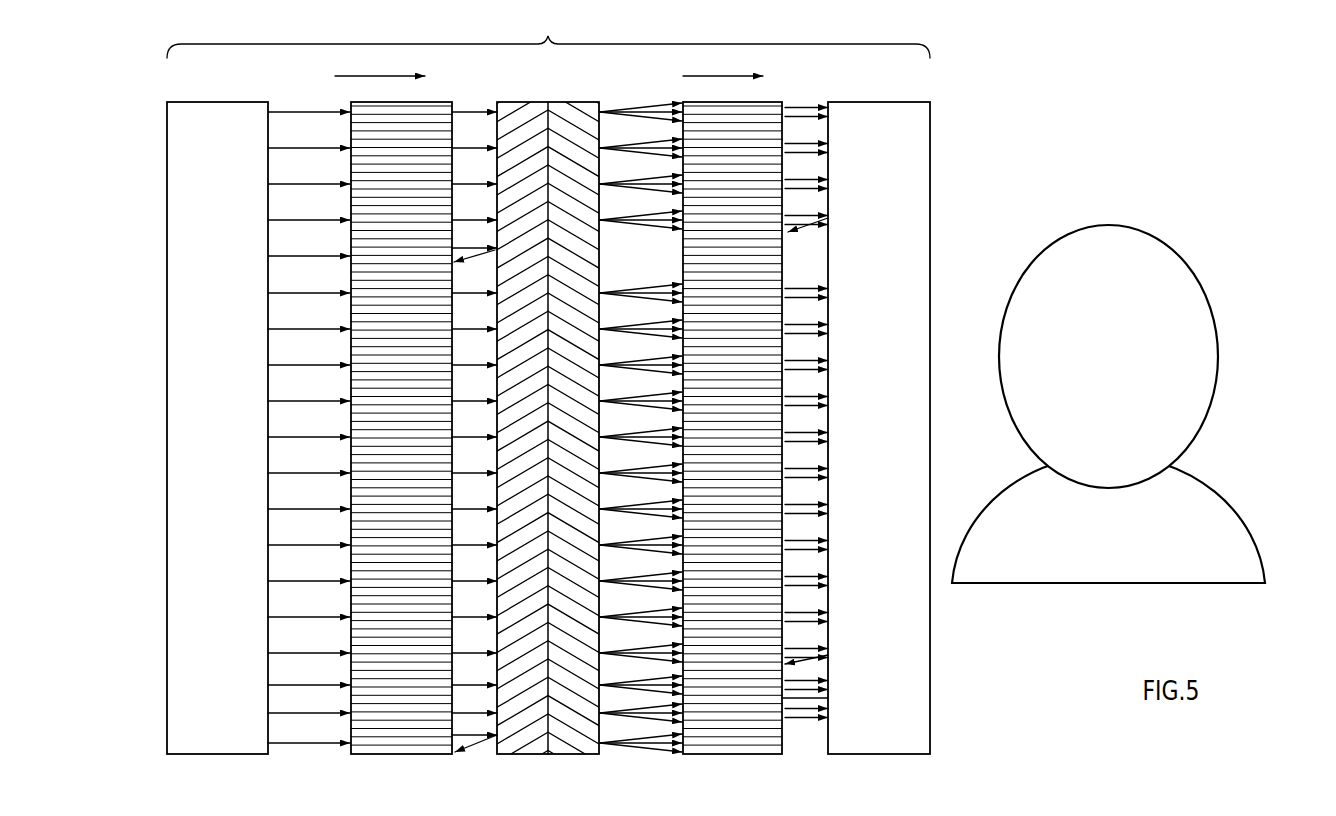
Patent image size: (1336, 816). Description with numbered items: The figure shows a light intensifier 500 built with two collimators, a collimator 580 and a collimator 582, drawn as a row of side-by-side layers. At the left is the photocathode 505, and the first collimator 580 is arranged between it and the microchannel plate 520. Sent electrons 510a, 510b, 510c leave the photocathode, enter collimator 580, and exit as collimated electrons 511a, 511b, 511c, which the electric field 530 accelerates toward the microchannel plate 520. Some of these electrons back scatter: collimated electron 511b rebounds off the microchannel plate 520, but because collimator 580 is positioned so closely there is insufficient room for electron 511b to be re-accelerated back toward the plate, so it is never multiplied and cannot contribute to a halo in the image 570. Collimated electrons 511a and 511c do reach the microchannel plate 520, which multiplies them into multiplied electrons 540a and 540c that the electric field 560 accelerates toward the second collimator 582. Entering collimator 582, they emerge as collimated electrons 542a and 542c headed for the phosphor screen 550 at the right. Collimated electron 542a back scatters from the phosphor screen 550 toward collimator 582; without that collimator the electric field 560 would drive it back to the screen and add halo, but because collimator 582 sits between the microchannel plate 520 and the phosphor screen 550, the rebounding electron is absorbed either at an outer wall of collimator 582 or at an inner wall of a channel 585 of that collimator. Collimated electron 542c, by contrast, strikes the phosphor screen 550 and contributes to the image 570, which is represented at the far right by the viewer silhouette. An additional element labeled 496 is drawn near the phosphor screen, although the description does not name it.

The light intensifier 500 is at (548, 36).
The light source / backlight 505 is at (167, 757).
The collimator 580 is at (402, 755).
The microchannel plate 520 is at (553, 755).
The collimator 582 is at (733, 755).
The channel 585 is at (755, 733).
The phosphor screen 550 is at (932, 737).
The output light ray 496 is at (828, 698).
The electric field 530 is at (350, 76).
The electric field 560 is at (742, 76).
The sent electron 510a is at (289, 220).
The sent electron 510b is at (290, 257).
The sent electron 510c is at (289, 363).
The collimated electron 511a is at (468, 218).
The collimated electron 511b is at (475, 248).
The collimated electron 511c is at (461, 366).
The collimated electron 542a is at (640, 215).
The collimated electron 542c is at (655, 371).
The multiplied electron 540a is at (789, 216).
The multiplied electron 540c is at (791, 362).
The image 570 is at (1277, 225).